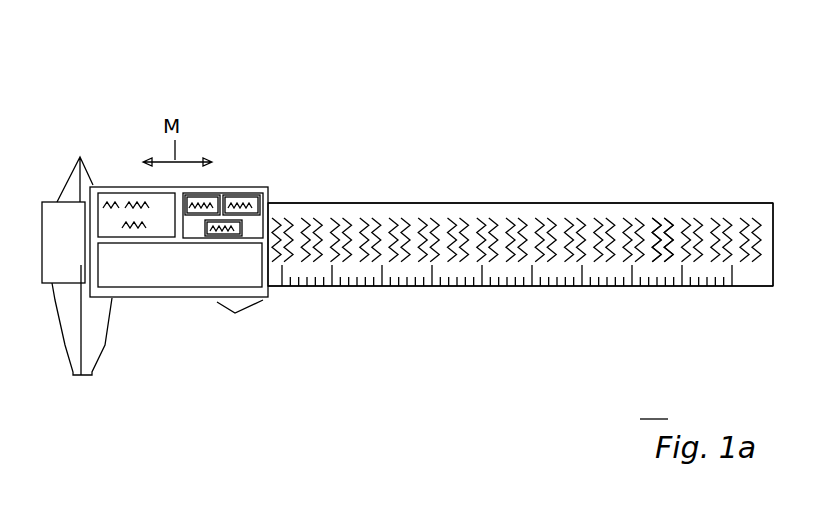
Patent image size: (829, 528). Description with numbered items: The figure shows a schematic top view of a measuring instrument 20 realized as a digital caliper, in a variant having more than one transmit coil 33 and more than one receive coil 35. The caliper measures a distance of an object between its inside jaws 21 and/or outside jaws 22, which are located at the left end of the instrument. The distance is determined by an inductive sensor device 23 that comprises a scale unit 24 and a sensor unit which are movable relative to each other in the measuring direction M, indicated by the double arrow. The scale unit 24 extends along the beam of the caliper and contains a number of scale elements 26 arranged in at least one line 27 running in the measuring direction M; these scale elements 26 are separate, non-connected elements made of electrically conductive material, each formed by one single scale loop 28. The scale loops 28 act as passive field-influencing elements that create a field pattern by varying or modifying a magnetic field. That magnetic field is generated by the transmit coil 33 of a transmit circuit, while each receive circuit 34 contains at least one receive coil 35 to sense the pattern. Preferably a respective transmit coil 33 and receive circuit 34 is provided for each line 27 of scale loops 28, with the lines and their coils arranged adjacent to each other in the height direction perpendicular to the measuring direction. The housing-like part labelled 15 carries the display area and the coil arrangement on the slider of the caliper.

The housing 15 is at (263, 300).
The measuring instrument 20 is at (732, 120).
The inside jaws 21 is at (98, 347).
The outside jaws 22 is at (95, 177).
The inductive sensor device 23 is at (352, 140).
The scale unit 24 is at (530, 203).
The scale elements 26 is at (460, 203).
The line 27 is at (775, 233).
The scale loop 28 is at (662, 240).
The transmit coil 33 is at (190, 215).
The receive circuit 34 is at (125, 190).
The receive coil 35 is at (248, 195).